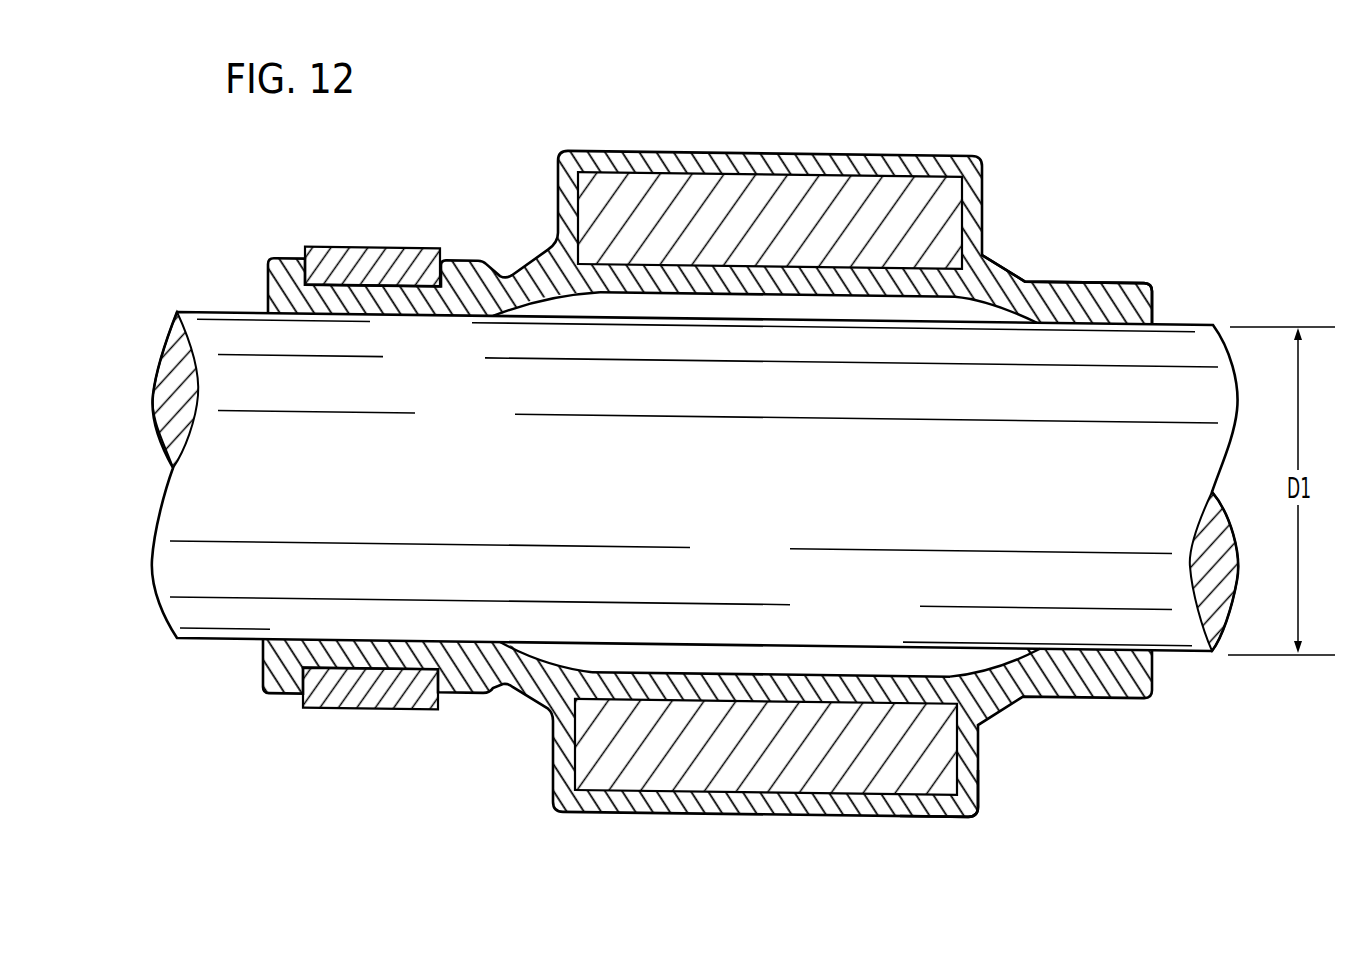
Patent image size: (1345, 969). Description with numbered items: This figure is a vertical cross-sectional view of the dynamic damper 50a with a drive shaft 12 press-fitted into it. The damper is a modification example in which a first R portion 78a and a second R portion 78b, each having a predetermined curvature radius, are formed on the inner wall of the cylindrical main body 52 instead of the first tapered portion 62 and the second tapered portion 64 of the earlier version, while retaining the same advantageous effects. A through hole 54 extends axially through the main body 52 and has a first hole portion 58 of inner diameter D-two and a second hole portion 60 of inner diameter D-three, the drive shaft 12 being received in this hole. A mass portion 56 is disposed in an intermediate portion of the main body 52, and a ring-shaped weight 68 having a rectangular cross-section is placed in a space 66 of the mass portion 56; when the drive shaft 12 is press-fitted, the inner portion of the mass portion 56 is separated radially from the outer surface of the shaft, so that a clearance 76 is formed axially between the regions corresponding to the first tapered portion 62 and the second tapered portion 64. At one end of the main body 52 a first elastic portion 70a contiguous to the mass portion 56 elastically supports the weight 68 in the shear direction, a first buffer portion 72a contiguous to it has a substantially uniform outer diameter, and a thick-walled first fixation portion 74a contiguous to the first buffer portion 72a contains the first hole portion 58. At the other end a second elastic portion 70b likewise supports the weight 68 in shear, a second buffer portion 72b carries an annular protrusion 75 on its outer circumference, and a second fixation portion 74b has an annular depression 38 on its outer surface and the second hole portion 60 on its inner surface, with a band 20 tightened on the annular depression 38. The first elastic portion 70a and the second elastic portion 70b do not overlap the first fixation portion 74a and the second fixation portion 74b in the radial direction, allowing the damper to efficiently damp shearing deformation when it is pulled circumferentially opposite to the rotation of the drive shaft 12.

The drive shaft 12 is at (1217, 577).
The band 20 is at (372, 275).
The annular depression 38 is at (310, 263).
The dynamic damper 50a is at (1143, 208).
The cylindrical main body 52 is at (1012, 265).
The through hole 54 is at (681, 672).
The mass portion 56 is at (853, 150).
The first hole portion 58 is at (1113, 651).
The second hole portion 60 is at (360, 641).
The first tapered portion 62 is at (1012, 652).
The second tapered portion 64 is at (522, 645).
The space 66 is at (978, 803).
The weight 68 is at (802, 755).
The first elastic portion 70a is at (995, 285).
The second elastic portion 70b is at (547, 285).
The first buffer portion 72a is at (1067, 310).
The second buffer portion 72b is at (487, 298).
The first fixation portion 74a is at (1118, 310).
The second fixation portion 74b is at (407, 302).
The annular protrusion 75 is at (463, 258).
The clearance 76 is at (733, 303).
The first R portion 78a is at (1005, 300).
The second R portion 78b is at (540, 278).